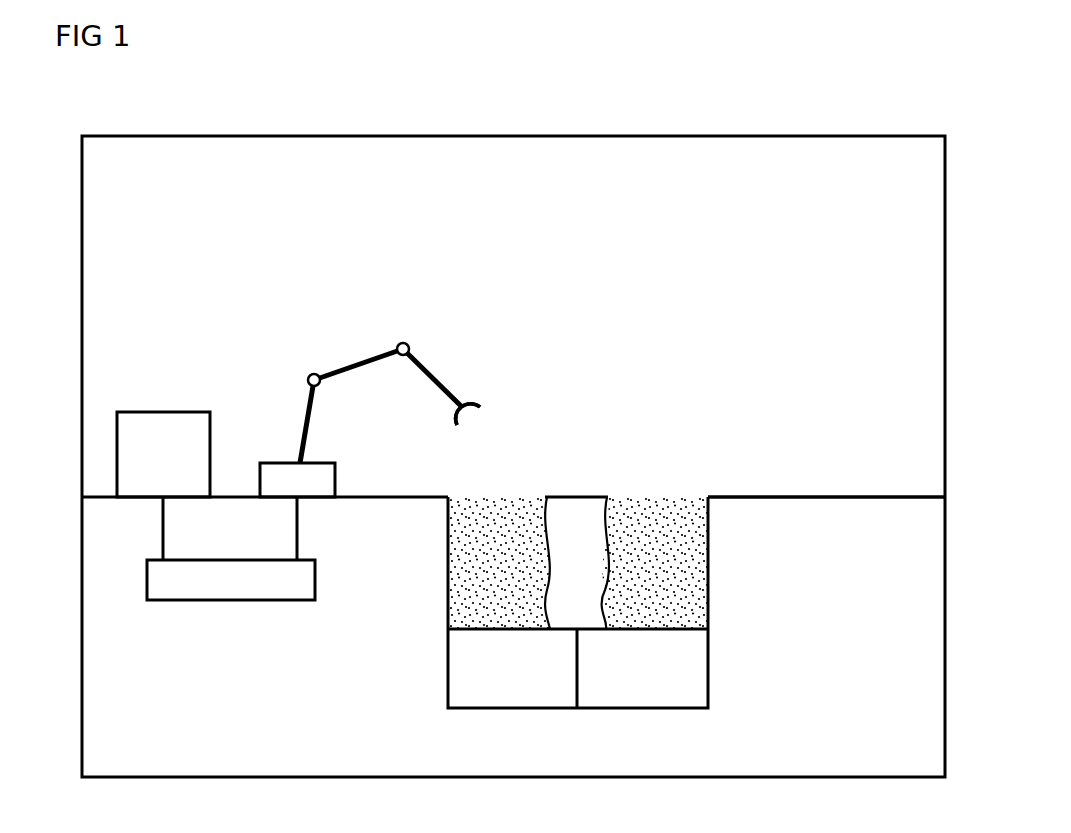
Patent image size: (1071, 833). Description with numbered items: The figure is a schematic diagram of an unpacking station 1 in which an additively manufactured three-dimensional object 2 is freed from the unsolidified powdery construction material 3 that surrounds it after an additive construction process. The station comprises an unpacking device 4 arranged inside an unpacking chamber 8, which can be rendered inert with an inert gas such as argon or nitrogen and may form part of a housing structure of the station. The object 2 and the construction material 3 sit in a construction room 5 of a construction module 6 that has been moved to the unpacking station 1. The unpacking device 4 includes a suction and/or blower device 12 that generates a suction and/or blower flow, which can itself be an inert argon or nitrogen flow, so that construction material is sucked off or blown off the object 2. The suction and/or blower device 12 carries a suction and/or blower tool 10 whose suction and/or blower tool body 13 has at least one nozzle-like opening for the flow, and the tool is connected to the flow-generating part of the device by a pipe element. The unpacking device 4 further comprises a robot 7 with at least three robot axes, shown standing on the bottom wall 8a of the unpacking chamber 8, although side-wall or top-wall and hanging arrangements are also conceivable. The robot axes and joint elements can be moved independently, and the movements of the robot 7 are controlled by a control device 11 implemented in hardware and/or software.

The unpacking station 1 is at (852, 120).
The additively manufactured three-dimensional object 2 is at (583, 510).
The construction material 3 is at (672, 512).
The unpacking device 4 is at (390, 364).
The construction room 5 is at (709, 580).
The construction module 6 is at (722, 678).
The robot 7 is at (343, 332).
The unpacking chamber 8 is at (908, 318).
The bottom wall 8a is at (815, 496).
The suction and/or blower tool 10 is at (492, 386).
The control device 11 is at (228, 603).
The suction and/or blower device 12 is at (168, 410).
The suction and/or blower tool body 13 is at (468, 414).